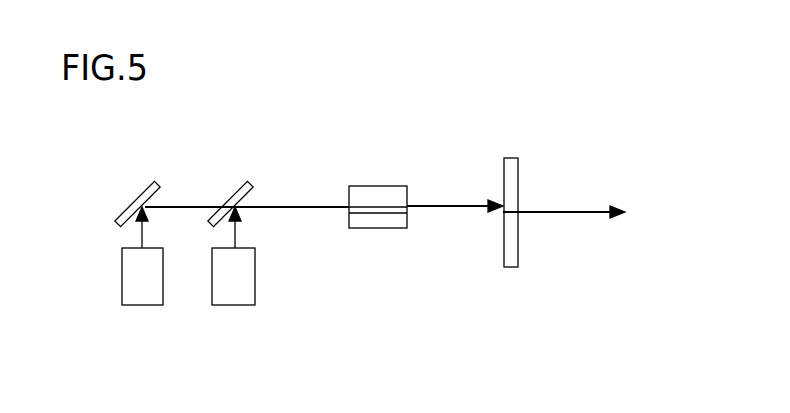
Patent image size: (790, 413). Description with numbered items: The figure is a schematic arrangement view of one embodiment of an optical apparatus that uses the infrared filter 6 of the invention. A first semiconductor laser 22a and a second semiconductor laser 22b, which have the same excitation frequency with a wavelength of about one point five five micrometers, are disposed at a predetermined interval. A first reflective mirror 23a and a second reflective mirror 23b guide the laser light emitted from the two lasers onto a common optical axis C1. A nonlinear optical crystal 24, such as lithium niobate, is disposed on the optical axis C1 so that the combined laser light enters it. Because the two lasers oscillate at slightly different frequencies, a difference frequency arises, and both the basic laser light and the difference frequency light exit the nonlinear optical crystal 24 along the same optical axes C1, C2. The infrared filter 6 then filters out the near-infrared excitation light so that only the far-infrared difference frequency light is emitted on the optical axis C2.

The first semiconductor laser 22a is at (143, 305).
The second semiconductor laser 22b is at (236, 305).
The first reflective mirror 23a is at (133, 204).
The second reflective mirror 23b is at (229, 204).
The nonlinear optical crystal 24 is at (387, 186).
The infrared filter 6 is at (518, 181).
The optical axis C1 is at (302, 208).
The optical axis C2 is at (570, 213).